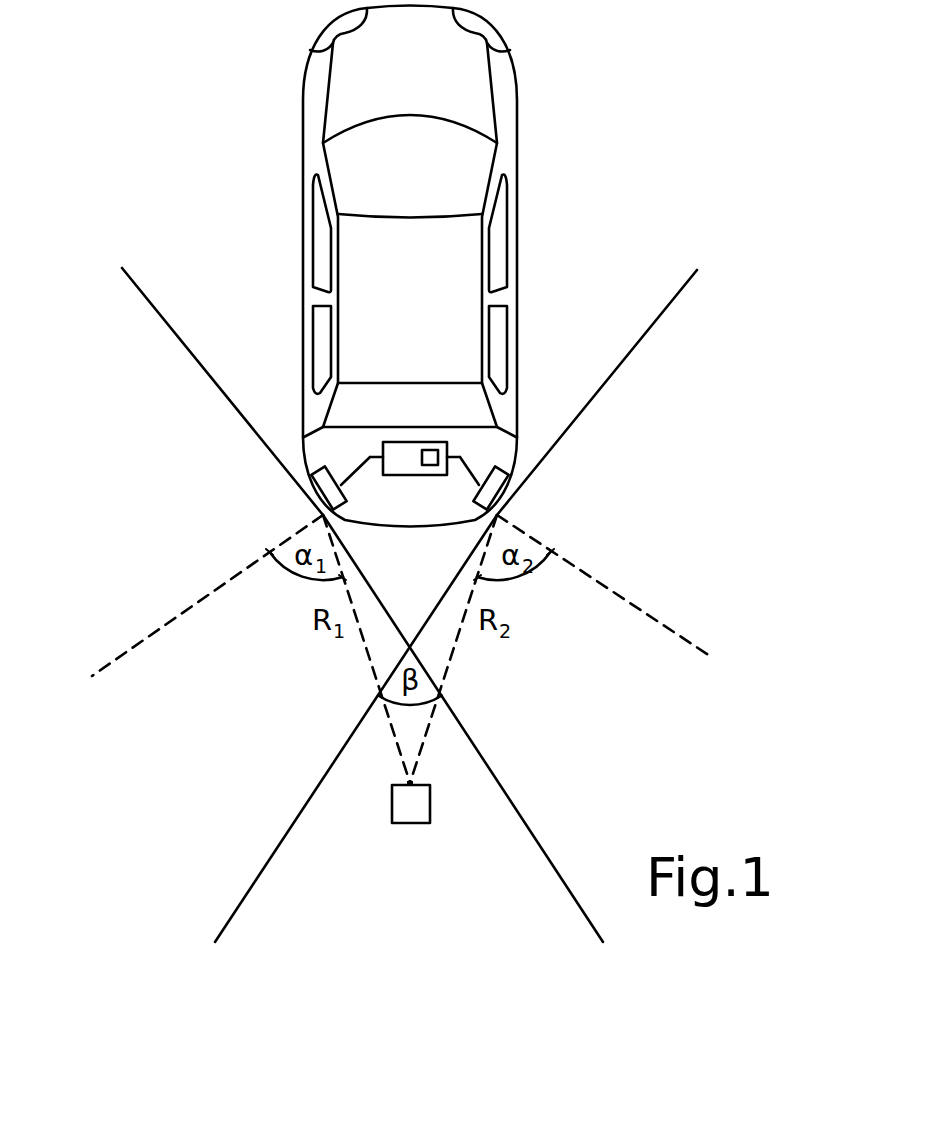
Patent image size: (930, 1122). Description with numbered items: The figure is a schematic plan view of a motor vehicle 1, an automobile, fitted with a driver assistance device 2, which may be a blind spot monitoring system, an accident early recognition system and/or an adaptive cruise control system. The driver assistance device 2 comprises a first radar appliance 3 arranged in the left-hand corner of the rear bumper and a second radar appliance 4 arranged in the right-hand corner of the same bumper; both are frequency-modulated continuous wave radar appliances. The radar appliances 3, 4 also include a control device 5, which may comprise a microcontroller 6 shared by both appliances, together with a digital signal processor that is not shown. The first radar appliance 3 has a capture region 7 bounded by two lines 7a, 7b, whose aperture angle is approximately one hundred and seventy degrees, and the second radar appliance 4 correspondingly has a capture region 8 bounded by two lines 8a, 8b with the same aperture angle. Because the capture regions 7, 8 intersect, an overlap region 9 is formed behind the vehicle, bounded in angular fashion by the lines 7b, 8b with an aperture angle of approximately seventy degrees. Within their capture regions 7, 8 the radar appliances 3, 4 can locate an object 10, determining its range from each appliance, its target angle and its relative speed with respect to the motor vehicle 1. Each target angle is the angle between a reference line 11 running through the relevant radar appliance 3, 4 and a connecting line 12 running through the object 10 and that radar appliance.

The motor vehicle 1 is at (300, 297).
The driver assistance device 2 is at (484, 446).
The first radar appliance 3 is at (343, 496).
The second radar appliance 4 is at (482, 500).
The control device 5 is at (397, 452).
The microcontroller 6 is at (425, 452).
The capture region 7 is at (190, 544).
The line 7a is at (158, 313).
The line 7b is at (557, 875).
The capture region 8 is at (596, 507).
The line 8a is at (675, 298).
The line 8b is at (248, 888).
The overlap region 9 is at (396, 875).
The object 10 is at (410, 803).
The reference line 11 is at (145, 640).
The connecting line 12 is at (370, 660).